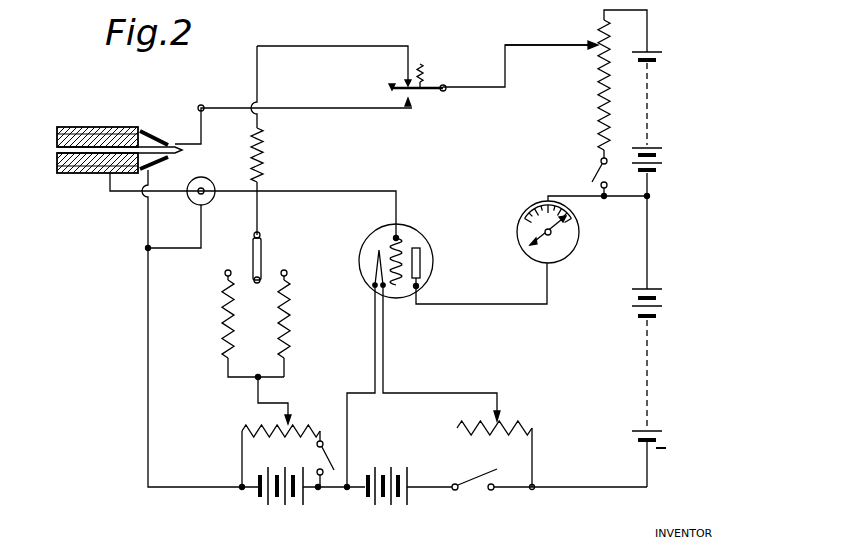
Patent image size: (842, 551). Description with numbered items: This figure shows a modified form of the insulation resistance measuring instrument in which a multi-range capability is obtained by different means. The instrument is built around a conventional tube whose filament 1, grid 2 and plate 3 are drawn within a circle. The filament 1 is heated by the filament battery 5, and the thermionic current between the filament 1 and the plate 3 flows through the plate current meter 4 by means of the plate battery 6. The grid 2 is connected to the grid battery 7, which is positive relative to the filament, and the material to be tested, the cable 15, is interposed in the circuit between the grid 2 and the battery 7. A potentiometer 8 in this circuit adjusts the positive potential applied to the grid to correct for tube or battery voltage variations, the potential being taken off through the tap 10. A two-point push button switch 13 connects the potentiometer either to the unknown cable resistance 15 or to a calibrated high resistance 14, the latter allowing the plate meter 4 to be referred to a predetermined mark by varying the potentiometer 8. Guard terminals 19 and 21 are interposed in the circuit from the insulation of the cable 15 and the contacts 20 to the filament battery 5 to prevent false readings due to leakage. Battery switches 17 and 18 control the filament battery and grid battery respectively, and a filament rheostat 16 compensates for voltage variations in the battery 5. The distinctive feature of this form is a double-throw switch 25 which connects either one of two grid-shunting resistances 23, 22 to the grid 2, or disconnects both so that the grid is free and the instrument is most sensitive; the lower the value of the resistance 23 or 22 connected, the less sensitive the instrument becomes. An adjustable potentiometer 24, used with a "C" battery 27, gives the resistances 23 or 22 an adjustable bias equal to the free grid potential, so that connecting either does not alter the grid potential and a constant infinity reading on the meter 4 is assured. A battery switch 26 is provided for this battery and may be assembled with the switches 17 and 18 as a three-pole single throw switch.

The filament 1 is at (376, 265).
The grid 2 is at (400, 242).
The plate 3 is at (421, 262).
The plate current meter 4 is at (560, 253).
The filament battery 5 is at (388, 500).
The plate battery 6 is at (650, 372).
The grid battery 7 is at (652, 112).
The potentiometer 8 is at (600, 50).
The tap-off 10 is at (566, 44).
The two-point push button switch 13 is at (430, 86).
The calibrated high resistance 14 is at (264, 160).
The cable 15 is at (93, 150).
The filament rheostat 16 is at (506, 421).
The battery switch 17 is at (470, 489).
The battery switch 18 is at (608, 178).
The guard terminal 19 is at (155, 130).
The contacts 20 is at (202, 104).
The guard terminal 21 is at (191, 203).
The grid-shunting resistance 22 is at (287, 318).
The grid-shunting resistance 23 is at (225, 315).
The adjustable potentiometer 24 is at (296, 412).
The double-throw switch 25 is at (263, 265).
The battery switch 26 is at (335, 472).
The "C" battery 27 is at (278, 505).